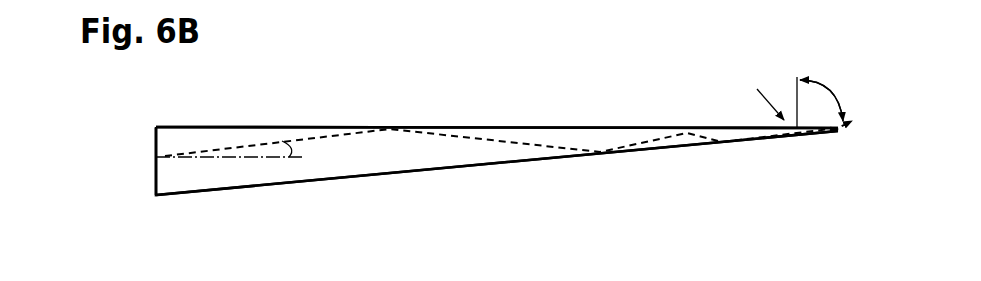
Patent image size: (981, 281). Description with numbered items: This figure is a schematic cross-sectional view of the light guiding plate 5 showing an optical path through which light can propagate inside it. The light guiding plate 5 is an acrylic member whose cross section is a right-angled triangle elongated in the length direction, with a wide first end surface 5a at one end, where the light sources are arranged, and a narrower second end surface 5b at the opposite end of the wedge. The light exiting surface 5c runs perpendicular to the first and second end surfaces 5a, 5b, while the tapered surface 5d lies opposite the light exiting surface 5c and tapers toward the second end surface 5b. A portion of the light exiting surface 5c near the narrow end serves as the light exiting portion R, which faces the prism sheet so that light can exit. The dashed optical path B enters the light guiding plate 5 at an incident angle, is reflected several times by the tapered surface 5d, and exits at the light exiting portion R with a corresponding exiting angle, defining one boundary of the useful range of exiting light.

The light guiding plate 5 is at (205, 144).
The first end surface 5a is at (156, 161).
The second end surface 5b is at (840, 132).
The light exiting surface 5c is at (552, 127).
The tapered surface 5d is at (422, 173).
The optical path B is at (488, 140).
The light exiting portion R is at (758, 96).